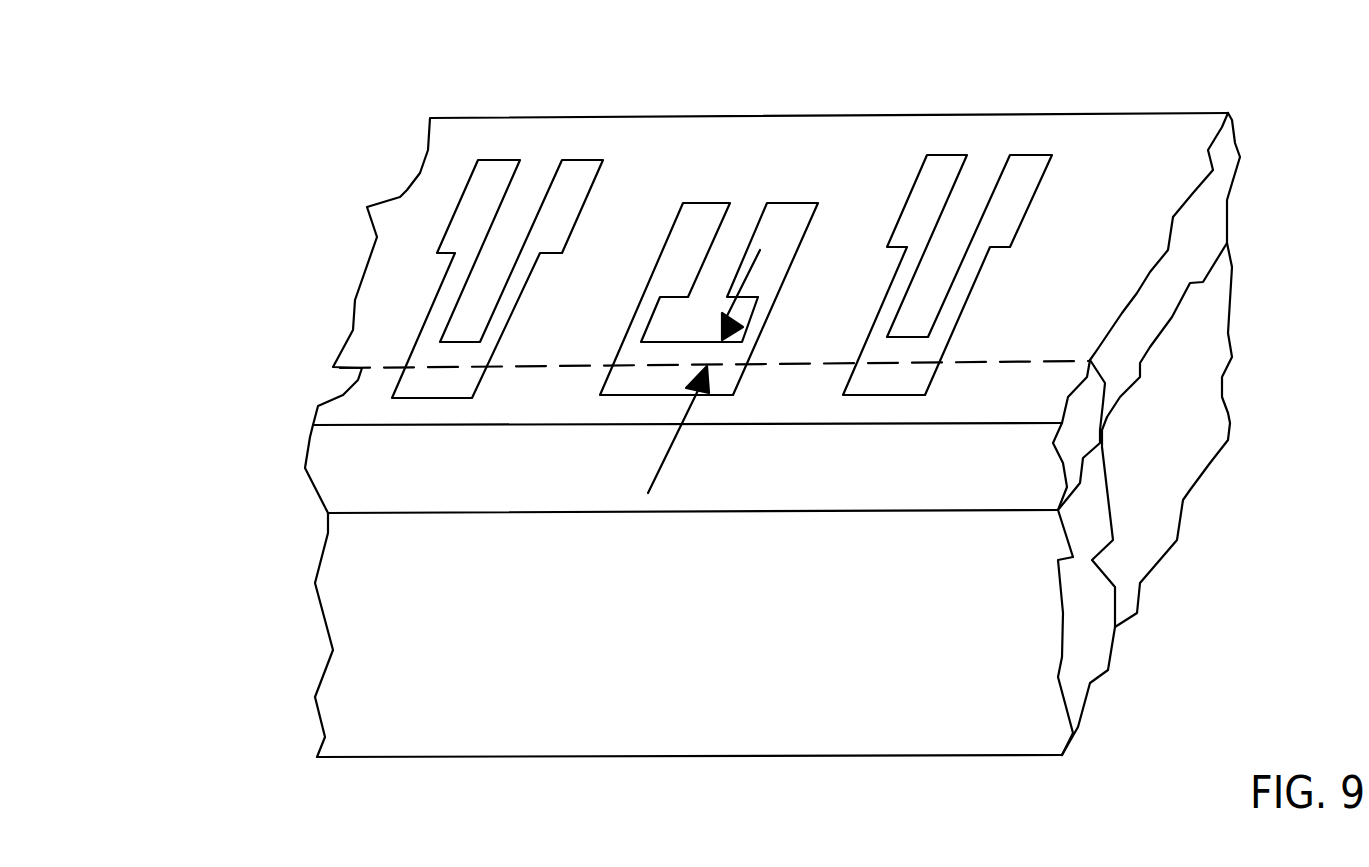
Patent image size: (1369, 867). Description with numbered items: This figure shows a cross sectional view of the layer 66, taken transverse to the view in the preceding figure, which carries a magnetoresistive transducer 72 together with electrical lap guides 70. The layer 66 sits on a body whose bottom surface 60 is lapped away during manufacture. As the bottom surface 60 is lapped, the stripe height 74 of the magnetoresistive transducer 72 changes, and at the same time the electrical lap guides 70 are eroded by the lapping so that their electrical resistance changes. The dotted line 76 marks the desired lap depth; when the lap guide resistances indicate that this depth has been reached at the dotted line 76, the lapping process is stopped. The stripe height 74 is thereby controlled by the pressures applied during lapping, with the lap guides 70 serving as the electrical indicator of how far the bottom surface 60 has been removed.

The bottom surface 60 is at (433, 675).
The layer 66 is at (395, 220).
The electrical lap guides 70 is at (443, 357).
The magnetoresistive transducer 72 is at (685, 353).
The stripe height 74 is at (663, 467).
The dotted line 76 is at (318, 406).